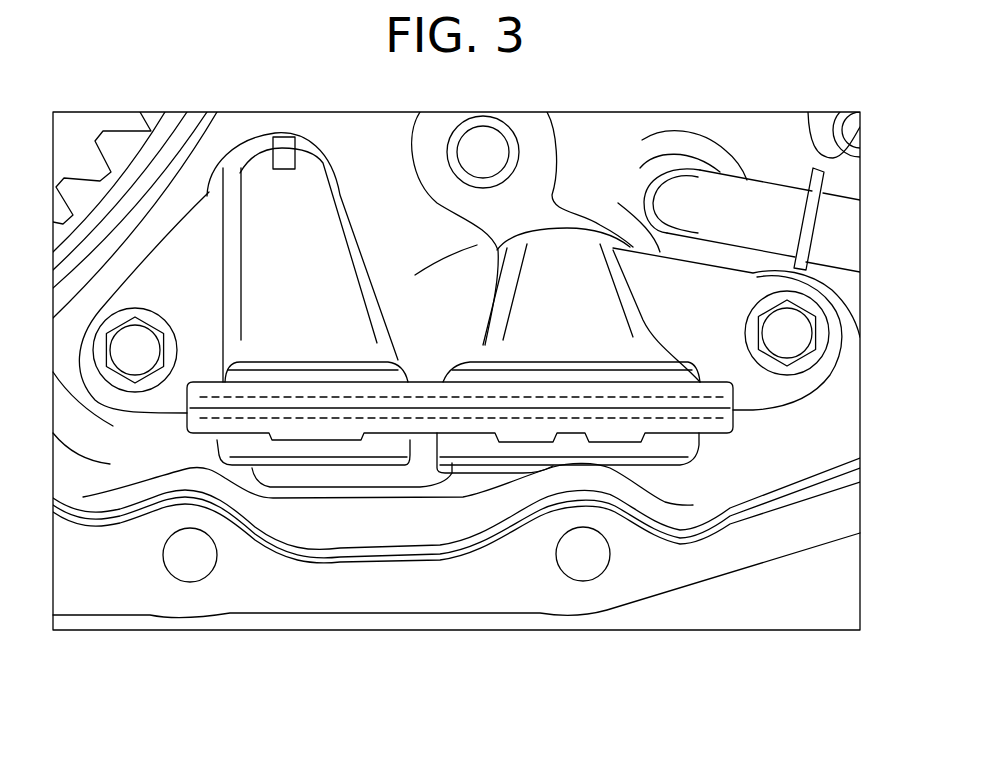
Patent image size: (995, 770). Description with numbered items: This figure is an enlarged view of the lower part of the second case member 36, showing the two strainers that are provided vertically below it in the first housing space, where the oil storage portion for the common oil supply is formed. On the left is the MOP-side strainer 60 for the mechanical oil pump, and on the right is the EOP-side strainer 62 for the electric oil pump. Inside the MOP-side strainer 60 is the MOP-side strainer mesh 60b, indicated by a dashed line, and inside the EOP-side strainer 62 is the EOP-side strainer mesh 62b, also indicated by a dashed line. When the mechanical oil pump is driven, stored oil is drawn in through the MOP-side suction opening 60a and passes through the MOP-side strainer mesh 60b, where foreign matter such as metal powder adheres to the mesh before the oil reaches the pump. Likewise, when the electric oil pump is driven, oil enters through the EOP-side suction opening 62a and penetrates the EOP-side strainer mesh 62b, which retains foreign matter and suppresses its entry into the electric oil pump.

The second case member 36 is at (107, 592).
The MOP-side strainer 60 is at (374, 232).
The EOP-side strainer 62 is at (642, 298).
The MOP-side suction opening 60a is at (375, 482).
The MOP-side strainer mesh 60b is at (247, 412).
The EOP-side suction opening 62a is at (479, 482).
The EOP-side strainer mesh 62b is at (667, 420).